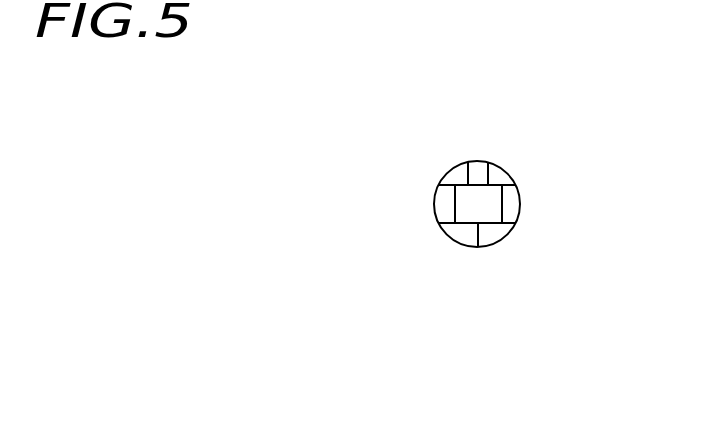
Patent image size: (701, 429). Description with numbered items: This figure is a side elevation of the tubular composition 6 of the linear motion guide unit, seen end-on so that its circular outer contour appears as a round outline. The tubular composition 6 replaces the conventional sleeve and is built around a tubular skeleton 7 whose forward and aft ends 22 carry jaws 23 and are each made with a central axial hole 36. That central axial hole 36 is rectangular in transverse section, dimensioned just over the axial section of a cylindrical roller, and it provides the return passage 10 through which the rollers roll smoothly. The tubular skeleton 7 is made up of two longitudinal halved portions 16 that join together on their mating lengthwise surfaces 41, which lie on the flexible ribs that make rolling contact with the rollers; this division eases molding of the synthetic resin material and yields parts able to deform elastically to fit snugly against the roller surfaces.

The tubular composition 6 is at (528, 168).
The tubular skeleton 7 is at (437, 188).
The return passage 10 is at (395, 220).
The central axial hole 36 is at (467, 211).
The longitudinal halved portions 16 is at (467, 172).
The mating lengthwise surfaces 41 is at (478, 183).
The forward and aft ends 22 is at (487, 236).
The jaws 23 is at (507, 178).